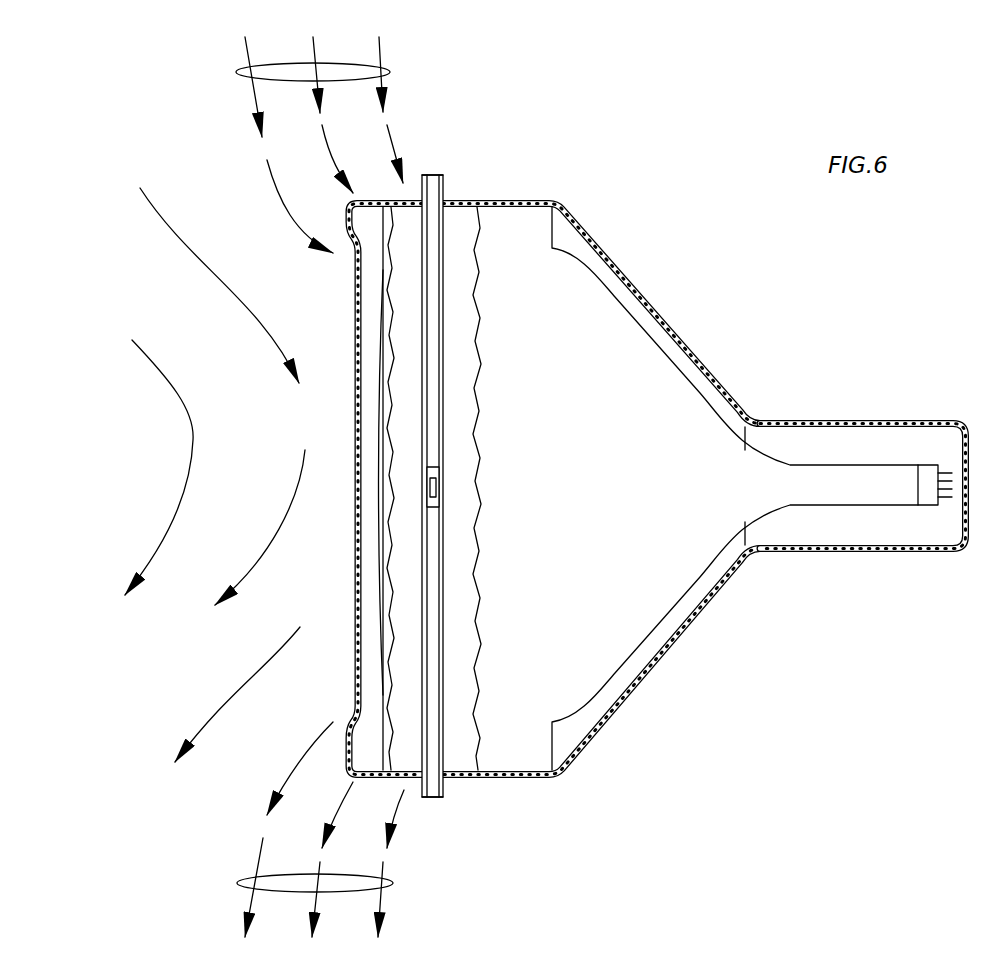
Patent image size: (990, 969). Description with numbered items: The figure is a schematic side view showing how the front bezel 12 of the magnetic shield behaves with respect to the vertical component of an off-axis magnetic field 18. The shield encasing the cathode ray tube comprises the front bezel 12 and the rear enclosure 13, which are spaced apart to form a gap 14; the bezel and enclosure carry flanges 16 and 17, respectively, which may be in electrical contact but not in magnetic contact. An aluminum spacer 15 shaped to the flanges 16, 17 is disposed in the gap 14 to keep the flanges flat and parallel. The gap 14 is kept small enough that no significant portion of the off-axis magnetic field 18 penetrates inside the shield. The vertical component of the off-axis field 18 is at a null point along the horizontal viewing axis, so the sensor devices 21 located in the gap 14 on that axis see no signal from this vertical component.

The front bezel 12 is at (376, 202).
The rear enclosure 13 is at (873, 418).
The gap 14 is at (440, 476).
The aluminum spacer 15 is at (433, 418).
The flange 16 is at (420, 200).
The flange 17 is at (446, 194).
The off-axis magnetic field 18 is at (390, 72).
The sensor device 21 is at (427, 485).